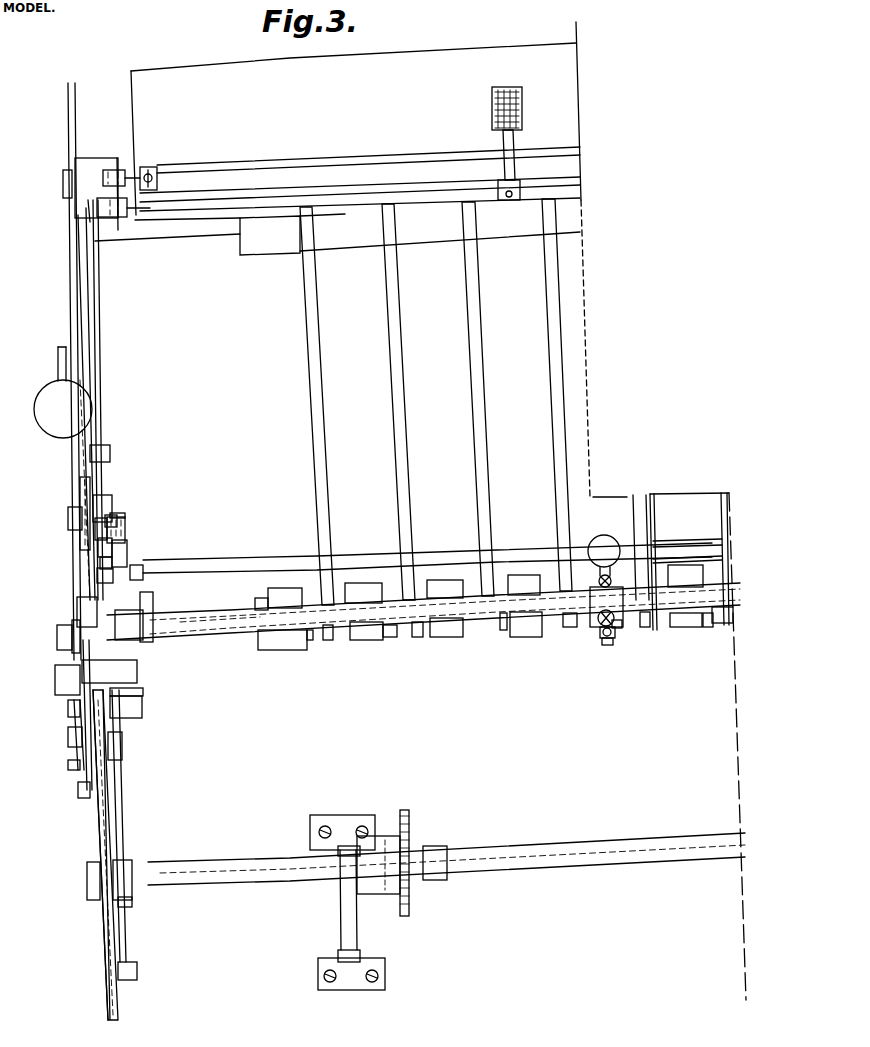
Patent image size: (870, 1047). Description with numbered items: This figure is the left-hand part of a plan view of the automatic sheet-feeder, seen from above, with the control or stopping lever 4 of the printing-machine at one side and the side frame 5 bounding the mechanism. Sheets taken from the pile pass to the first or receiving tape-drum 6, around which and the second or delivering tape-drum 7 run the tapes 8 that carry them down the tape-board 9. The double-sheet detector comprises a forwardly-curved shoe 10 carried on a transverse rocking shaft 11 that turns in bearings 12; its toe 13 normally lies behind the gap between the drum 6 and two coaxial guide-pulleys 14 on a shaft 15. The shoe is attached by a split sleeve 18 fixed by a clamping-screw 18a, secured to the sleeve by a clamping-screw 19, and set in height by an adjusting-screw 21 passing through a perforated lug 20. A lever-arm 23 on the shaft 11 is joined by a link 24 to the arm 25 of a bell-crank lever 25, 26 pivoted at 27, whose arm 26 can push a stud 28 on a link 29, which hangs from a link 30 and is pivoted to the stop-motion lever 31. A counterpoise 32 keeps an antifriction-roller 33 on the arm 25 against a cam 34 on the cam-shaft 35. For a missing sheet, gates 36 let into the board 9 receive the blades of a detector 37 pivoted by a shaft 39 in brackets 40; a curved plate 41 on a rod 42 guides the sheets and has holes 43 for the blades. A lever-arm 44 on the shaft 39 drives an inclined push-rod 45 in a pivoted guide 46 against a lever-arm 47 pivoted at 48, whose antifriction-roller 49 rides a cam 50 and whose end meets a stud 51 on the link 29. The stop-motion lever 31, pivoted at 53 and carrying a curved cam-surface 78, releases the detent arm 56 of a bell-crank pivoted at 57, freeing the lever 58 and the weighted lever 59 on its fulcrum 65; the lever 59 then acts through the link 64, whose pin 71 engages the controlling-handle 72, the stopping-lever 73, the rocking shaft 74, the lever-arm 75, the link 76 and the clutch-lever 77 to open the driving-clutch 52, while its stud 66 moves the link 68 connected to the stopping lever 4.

The control or stopping lever 4 is at (68, 258).
The side frame 5 is at (118, 996).
The first or receiving tape-drum 6 is at (396, 642).
The second or delivering tape-drum 7 is at (337, 234).
The tapes 8 is at (390, 340).
The tape-board 9 is at (544, 395).
The shoe 10 is at (612, 646).
The transverse rod or shaft 11 is at (356, 622).
The bearings 12 is at (58, 628).
The toe 13 is at (590, 590).
The guide-pulleys 14 is at (290, 648).
The shaft 15 is at (235, 636).
The split sleeve 18 is at (598, 626).
The clamping-screw 18a is at (614, 580).
The clamping-screw 19 is at (607, 646).
The forwardly-projecting perforated lug 20 is at (616, 628).
The adjusting-screw 21 is at (602, 640).
The lever-arm 23 is at (153, 605).
The link 24 is at (148, 645).
The arm of bell-crank lever 25 is at (128, 548).
The lever-arm 26 is at (117, 520).
The pivot 27 is at (125, 516).
The stud 28 is at (126, 530).
The link 29 is at (137, 663).
The link 30 is at (112, 505).
The stop-motion lever 31 is at (143, 706).
The counterpoise 32 is at (606, 537).
The antifriction-roller 33 is at (144, 570).
The cam 34 is at (214, 578).
The cam-shaft 35 is at (244, 568).
The gates 36 is at (520, 88).
The detector 37 is at (522, 108).
The shaft 39 is at (182, 207).
The brackets 40 is at (110, 194).
The curved plate 41 is at (360, 259).
The rod 42 is at (302, 166).
The holes 43 is at (492, 100).
The lever-arm 44 is at (104, 215).
The inclined push-rod 45 is at (99, 333).
The pivoted guide 46 is at (110, 458).
The lever-arm 47 is at (98, 550).
The pivot 48 is at (112, 560).
The antifriction-roller 49 is at (96, 535).
The cam 50 is at (80, 603).
The stud 51 is at (97, 578).
The driving-clutch 52 is at (378, 895).
The pivot 53 is at (122, 742).
The lever-arm 56 is at (68, 740).
The pivot 57 is at (57, 677).
The lever 58 is at (68, 708).
The weighted lever 59 is at (56, 394).
The link 64 is at (82, 798).
The fulcrum 65 is at (57, 642).
The stud 66 is at (80, 500).
The link 68 is at (68, 520).
The pin 71 is at (77, 770).
The controlling-handle 72 is at (90, 796).
The stopping-lever 73 is at (68, 766).
The rocking shaft 74 is at (122, 800).
The lever-arm 75 is at (132, 901).
The link 76 is at (255, 880).
The clutch-lever 77 is at (336, 882).
The curved cam-surface 78 is at (117, 689).